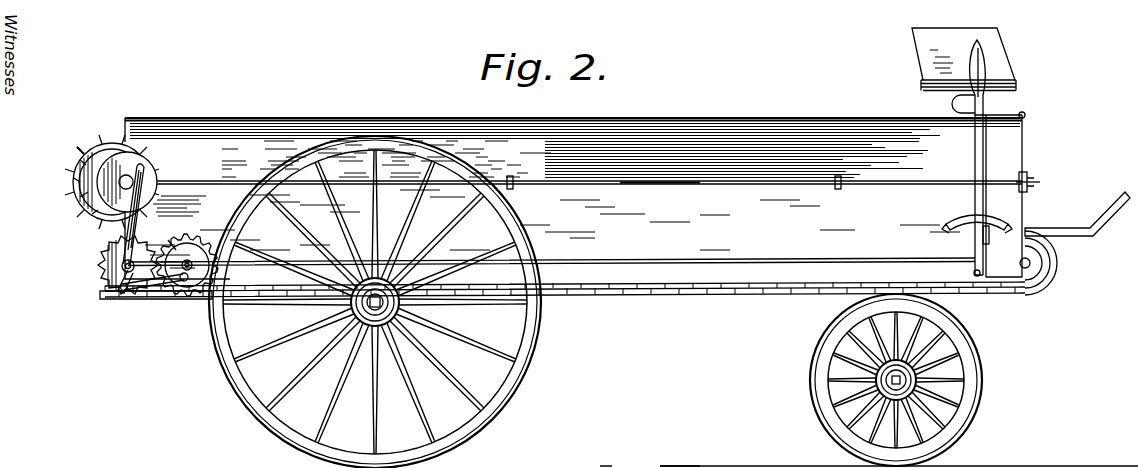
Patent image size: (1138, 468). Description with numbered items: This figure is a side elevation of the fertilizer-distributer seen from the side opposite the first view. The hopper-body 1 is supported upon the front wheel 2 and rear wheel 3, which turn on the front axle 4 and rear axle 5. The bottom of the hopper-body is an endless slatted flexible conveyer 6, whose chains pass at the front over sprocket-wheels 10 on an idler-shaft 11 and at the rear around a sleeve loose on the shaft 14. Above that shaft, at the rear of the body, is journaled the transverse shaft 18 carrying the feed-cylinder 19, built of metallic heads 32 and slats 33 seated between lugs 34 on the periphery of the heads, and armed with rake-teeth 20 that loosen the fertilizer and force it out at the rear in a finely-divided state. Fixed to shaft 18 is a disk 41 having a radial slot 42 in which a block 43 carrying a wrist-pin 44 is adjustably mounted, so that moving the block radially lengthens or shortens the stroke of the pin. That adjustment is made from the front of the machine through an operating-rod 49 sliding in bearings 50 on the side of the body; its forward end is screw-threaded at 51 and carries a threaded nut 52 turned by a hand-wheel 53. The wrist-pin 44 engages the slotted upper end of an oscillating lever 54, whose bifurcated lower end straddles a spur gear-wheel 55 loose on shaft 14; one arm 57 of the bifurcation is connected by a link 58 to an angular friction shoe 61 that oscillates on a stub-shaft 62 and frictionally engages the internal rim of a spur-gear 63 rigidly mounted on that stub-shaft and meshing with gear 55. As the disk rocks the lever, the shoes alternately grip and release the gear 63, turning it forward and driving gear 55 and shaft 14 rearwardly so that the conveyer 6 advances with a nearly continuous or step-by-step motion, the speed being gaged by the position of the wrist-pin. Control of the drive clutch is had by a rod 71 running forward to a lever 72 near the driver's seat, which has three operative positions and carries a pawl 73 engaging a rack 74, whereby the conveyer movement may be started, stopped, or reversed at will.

The hopper-body 1 is at (512, 130).
The front wheel 2 is at (970, 370).
The rear wheel 3 is at (530, 340).
The front axle 4 is at (878, 380).
The rear axle 5 is at (351, 305).
The endless slatted flexible conveyer 6 is at (652, 292).
The sprocket-wheels 10 is at (1040, 271).
The idler-shaft 11 is at (1052, 262).
The shaft 14 is at (122, 267).
The transverse shaft 18 is at (128, 176).
The feed-cylinder 19 is at (112, 138).
The rake-teeth 20 is at (88, 148).
The heads 32 is at (86, 191).
The slats 33 is at (78, 180).
The lugs 34 is at (84, 162).
The disk 41 is at (97, 214).
The radial slot 42 is at (869, 452).
The block 43 is at (685, 452).
The wrist-pin 44 is at (148, 172).
The operating-rod 49 is at (660, 184).
The bearings 50 is at (514, 186).
The screw-threaded end 51 is at (1034, 183).
The threaded nut 52 is at (1024, 172).
The hand-wheel 53 is at (1030, 178).
The oscillating lever 54 is at (205, 184).
The spur gear-wheel 55 is at (118, 285).
The arm 57 is at (112, 294).
The link 58 is at (146, 292).
The friction shoe 61 is at (186, 283).
The stub-shaft 62 is at (190, 259).
The spur-gear 63 is at (172, 240).
The rod 71 is at (660, 237).
The lever 72 is at (975, 157).
The pawl 73 is at (985, 227).
The rack 74 is at (988, 237).